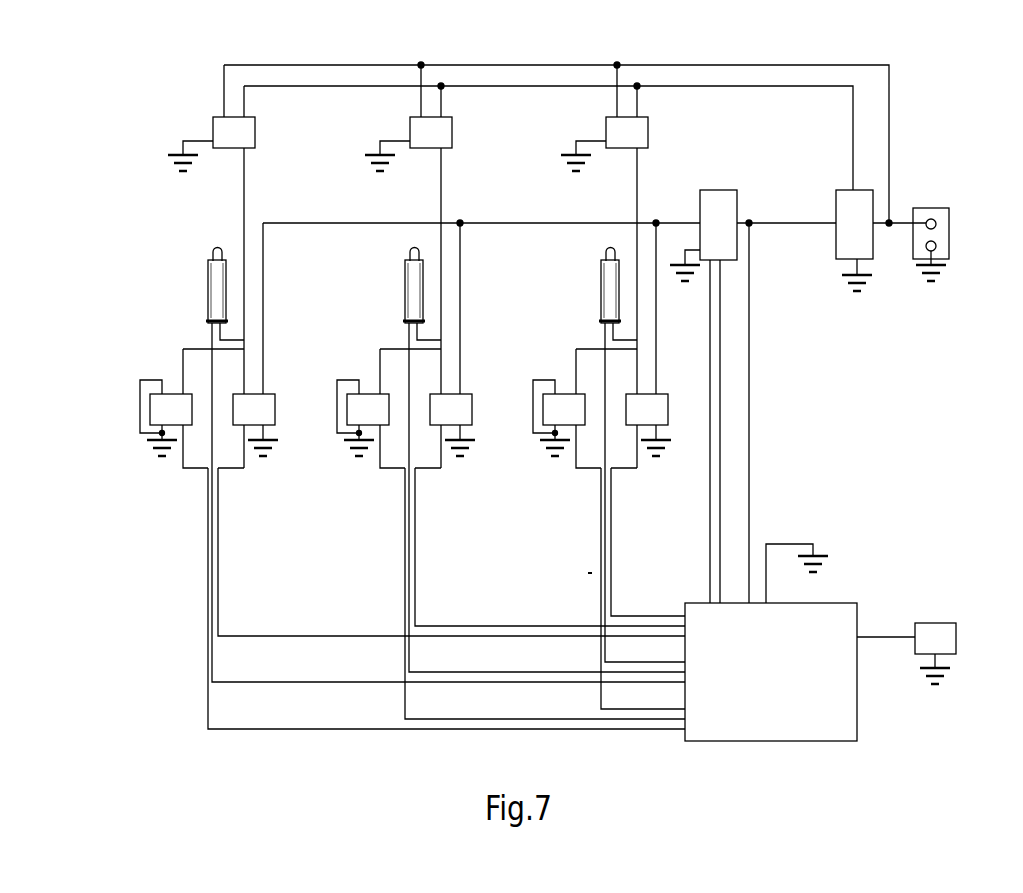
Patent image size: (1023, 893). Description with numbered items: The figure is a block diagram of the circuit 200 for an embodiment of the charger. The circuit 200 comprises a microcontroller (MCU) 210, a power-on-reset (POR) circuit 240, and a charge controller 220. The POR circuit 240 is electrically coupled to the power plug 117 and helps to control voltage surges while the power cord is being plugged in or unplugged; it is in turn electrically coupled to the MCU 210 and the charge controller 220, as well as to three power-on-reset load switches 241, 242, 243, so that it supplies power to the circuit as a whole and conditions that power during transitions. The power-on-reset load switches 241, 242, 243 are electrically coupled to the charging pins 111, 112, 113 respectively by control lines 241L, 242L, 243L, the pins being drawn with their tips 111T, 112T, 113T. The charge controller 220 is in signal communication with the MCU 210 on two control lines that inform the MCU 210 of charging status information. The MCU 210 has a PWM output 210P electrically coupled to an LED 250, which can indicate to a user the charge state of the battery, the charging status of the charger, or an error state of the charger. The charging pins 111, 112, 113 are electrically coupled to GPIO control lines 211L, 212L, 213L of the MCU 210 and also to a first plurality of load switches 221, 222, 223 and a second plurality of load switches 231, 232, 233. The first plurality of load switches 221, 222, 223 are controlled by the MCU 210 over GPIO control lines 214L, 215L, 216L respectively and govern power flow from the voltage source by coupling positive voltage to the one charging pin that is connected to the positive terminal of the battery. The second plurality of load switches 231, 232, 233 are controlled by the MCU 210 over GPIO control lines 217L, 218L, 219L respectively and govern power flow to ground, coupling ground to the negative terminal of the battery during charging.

The circuit 200 is at (931, 50).
The power plug 117 is at (944, 221).
The charge controller 220 is at (722, 198).
The power-on-reset (POR) circuit 240 is at (852, 249).
The power-on-reset load switch 241 is at (222, 142).
The power-on-reset load switch 242 is at (408, 116).
The power-on-reset load switch 243 is at (604, 116).
The control line 241L is at (245, 165).
The control line 242L is at (480, 248).
The control line 243L is at (676, 248).
The charging pin 111 is at (216, 296).
The charging pin 112 is at (506, 466).
The charging pin 113 is at (604, 461).
The first sensor tip 111T is at (213, 250).
The second sensor tip 112T is at (379, 253).
The third sensor tip 113T is at (575, 253).
The load switch 221 is at (242, 419).
The load switch 222 is at (452, 344).
The load switch 223 is at (648, 344).
The load switch 231 is at (159, 419).
The load switch 232 is at (389, 408).
The load switch 233 is at (585, 408).
The GPIO control line 211L is at (213, 450).
The GPIO control line 212L is at (446, 413).
The GPIO control line 213L is at (642, 413).
The GPIO control line 214L is at (219, 530).
The GPIO control line 215L is at (550, 547).
The GPIO control line 216L is at (650, 542).
The GPIO control line 217L is at (207, 530).
The GPIO control line 218L is at (506, 593).
The GPIO control line 219L is at (604, 588).
The microcontroller (MCU) 210 is at (795, 713).
The PWM output 210P is at (884, 640).
The LED 250 is at (937, 636).